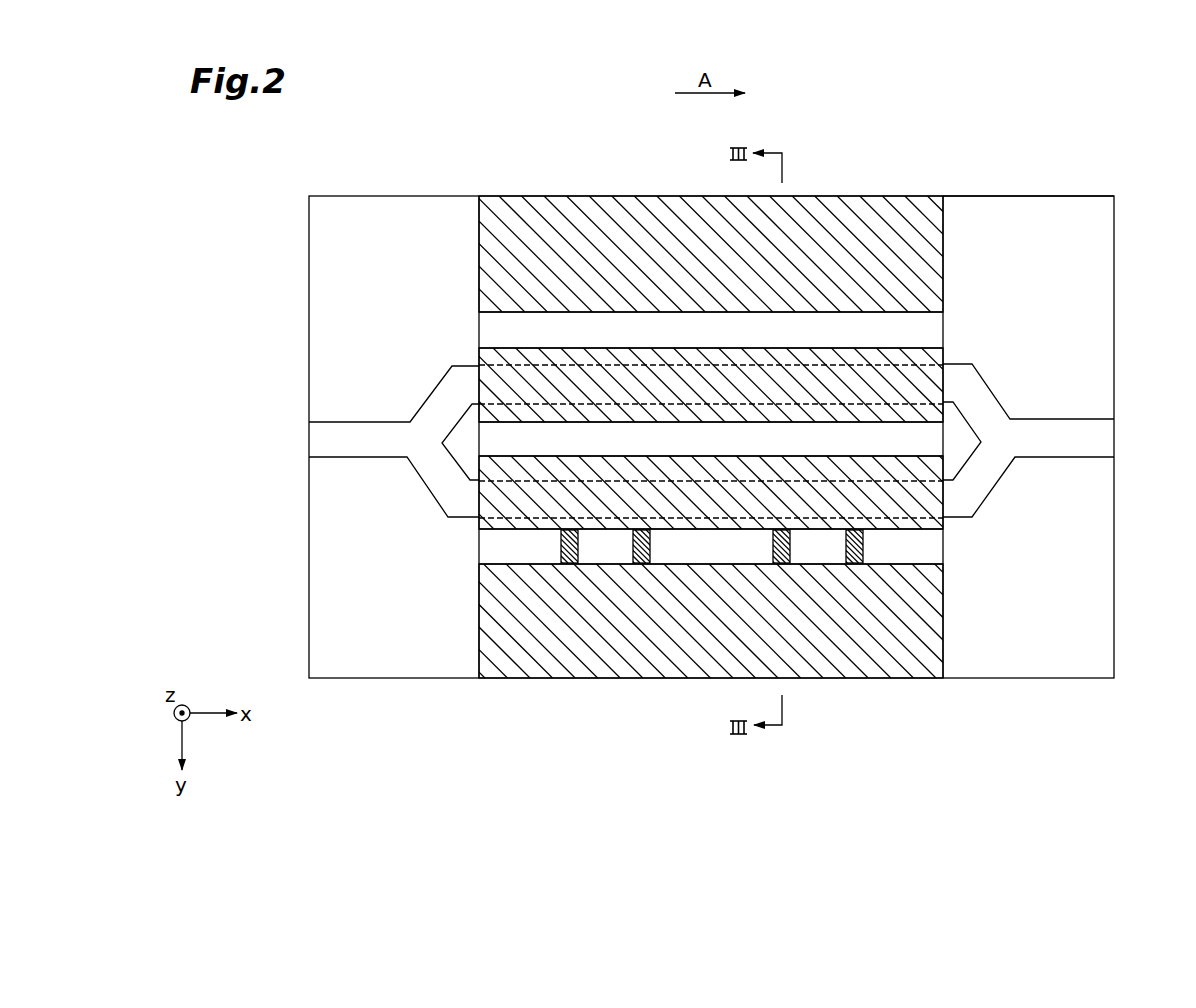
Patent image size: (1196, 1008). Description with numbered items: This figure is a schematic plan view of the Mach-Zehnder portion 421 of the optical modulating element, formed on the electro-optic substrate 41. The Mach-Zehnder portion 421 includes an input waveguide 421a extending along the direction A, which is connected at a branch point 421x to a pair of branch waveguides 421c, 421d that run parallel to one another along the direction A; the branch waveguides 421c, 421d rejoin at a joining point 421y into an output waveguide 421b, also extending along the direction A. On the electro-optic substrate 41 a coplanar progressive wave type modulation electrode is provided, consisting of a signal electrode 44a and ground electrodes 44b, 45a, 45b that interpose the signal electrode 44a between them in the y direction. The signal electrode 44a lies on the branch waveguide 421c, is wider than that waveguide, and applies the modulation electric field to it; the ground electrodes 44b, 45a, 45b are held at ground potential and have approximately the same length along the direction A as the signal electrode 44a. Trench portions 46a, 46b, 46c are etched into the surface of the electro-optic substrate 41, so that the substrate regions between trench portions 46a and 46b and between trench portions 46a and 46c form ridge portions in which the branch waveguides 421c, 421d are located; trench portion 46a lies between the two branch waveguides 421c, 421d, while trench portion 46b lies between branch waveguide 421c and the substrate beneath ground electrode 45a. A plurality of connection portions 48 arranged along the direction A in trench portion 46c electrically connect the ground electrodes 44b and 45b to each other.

The electro-optic substrate 41 is at (1100, 252).
The Mach-Zehnder portion 421 is at (1058, 196).
The input waveguide 421a is at (357, 437).
The output waveguide 421b is at (1063, 443).
The branch waveguide 421c is at (900, 372).
The branch waveguide 421d is at (943, 532).
The branch point 421x is at (422, 447).
The joining point 421y is at (1000, 438).
The signal electrode 44a is at (485, 355).
The ground electrode 44b is at (492, 530).
The ground electrode 45a is at (935, 253).
The ground electrode 45b is at (932, 630).
The trench portion 46a is at (928, 436).
The trench portion 46b is at (510, 330).
The trench portion 46c is at (492, 547).
The connection portion 48 is at (640, 563).